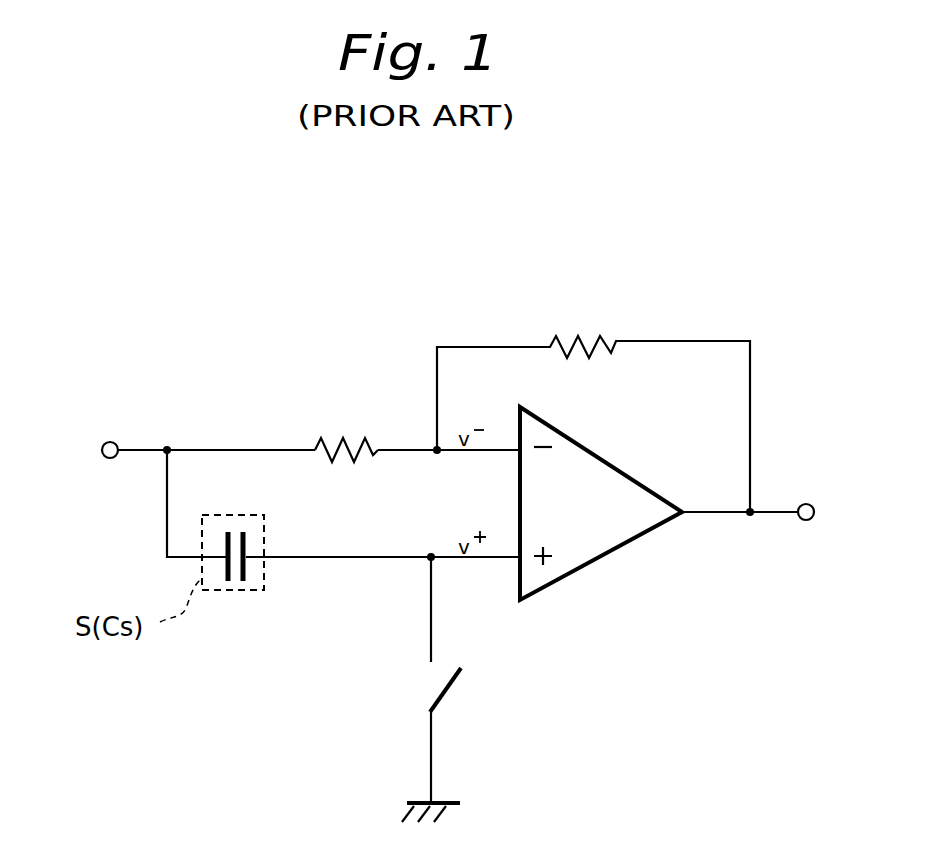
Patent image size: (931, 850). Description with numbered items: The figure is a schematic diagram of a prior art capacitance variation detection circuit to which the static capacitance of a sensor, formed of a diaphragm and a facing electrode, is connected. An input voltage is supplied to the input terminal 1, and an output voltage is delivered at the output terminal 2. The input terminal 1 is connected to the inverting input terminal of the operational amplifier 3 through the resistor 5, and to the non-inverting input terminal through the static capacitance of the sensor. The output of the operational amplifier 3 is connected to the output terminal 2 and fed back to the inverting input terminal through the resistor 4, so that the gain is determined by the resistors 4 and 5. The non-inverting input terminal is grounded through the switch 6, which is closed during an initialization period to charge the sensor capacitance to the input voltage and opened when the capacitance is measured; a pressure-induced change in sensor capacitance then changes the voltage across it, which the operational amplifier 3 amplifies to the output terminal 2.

The input terminal 1 is at (112, 441).
The output terminal 2 is at (804, 504).
The operational amplifier 3 is at (612, 553).
The resistor 4 is at (588, 337).
The resistor 5 is at (352, 444).
The switch 6 is at (453, 688).